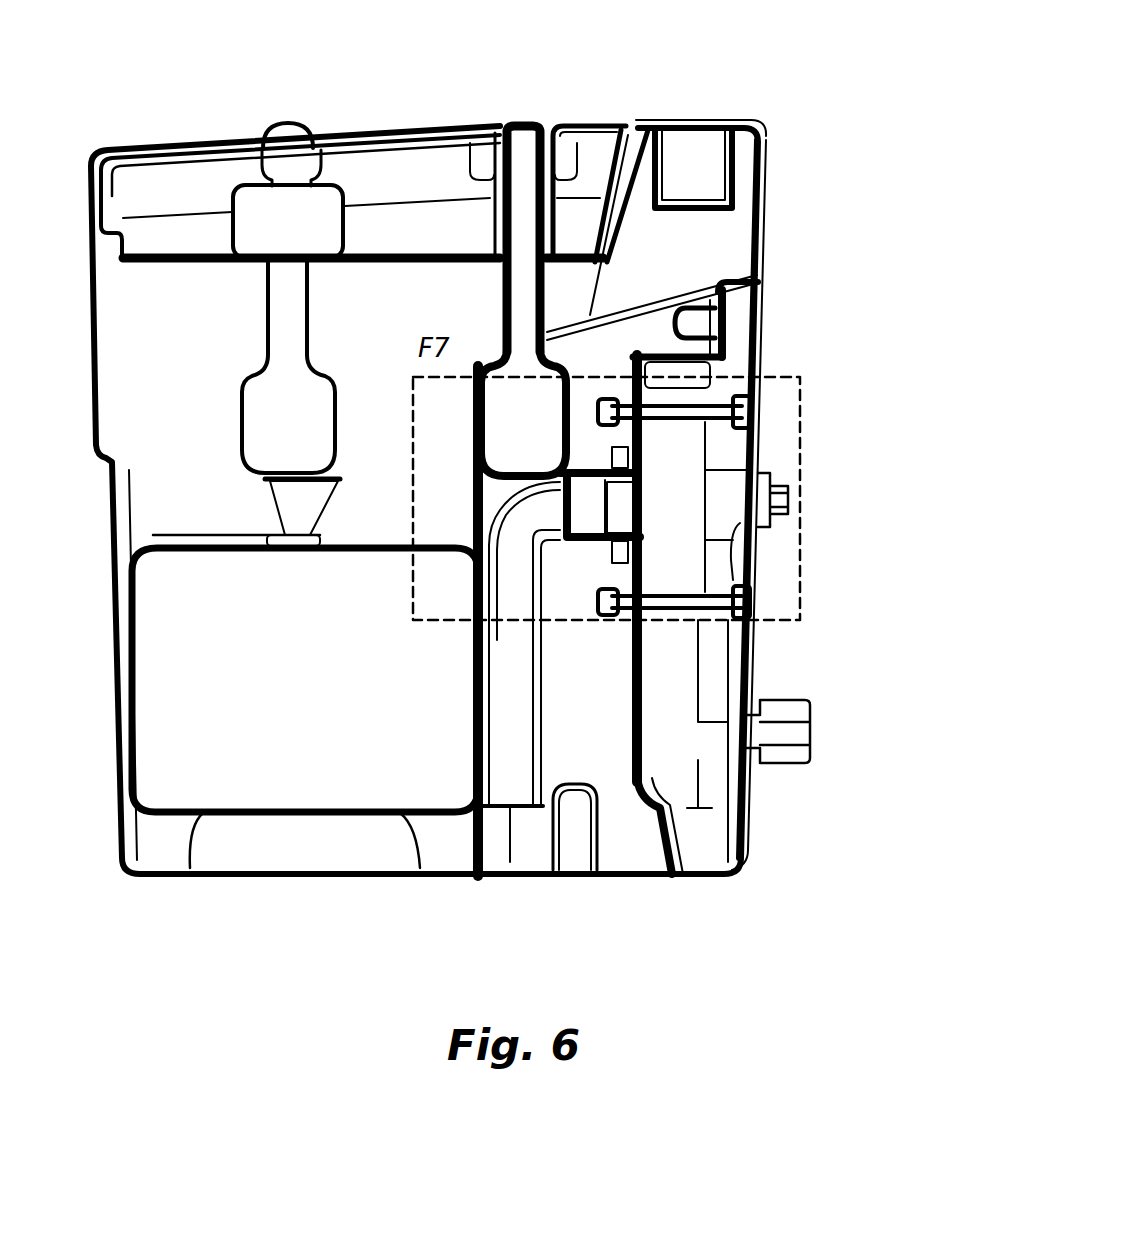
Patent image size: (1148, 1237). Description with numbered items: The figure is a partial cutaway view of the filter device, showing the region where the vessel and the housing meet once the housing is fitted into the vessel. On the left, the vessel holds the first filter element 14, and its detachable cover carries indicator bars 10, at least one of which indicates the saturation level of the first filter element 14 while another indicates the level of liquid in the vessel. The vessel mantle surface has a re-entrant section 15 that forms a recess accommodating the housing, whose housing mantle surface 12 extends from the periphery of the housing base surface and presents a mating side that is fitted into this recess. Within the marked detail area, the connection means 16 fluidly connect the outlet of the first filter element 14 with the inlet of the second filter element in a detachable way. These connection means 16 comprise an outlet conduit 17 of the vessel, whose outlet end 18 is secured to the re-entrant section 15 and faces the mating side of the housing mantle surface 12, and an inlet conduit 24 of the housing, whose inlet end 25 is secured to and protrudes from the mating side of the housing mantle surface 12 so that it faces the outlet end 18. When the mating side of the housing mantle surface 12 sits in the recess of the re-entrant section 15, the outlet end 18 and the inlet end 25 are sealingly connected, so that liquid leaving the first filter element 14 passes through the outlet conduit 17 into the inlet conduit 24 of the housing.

The indicator bars 10 is at (462, 292).
The housing mantle surface 12 is at (647, 661).
The first filter element 14 is at (270, 740).
The re-entrant section 15 is at (645, 665).
The connection means 16 is at (662, 499).
The outlet conduit 17 is at (548, 670).
The outlet end 18 is at (588, 458).
The inlet conduit 24 is at (617, 519).
The inlet end 25 is at (594, 518).